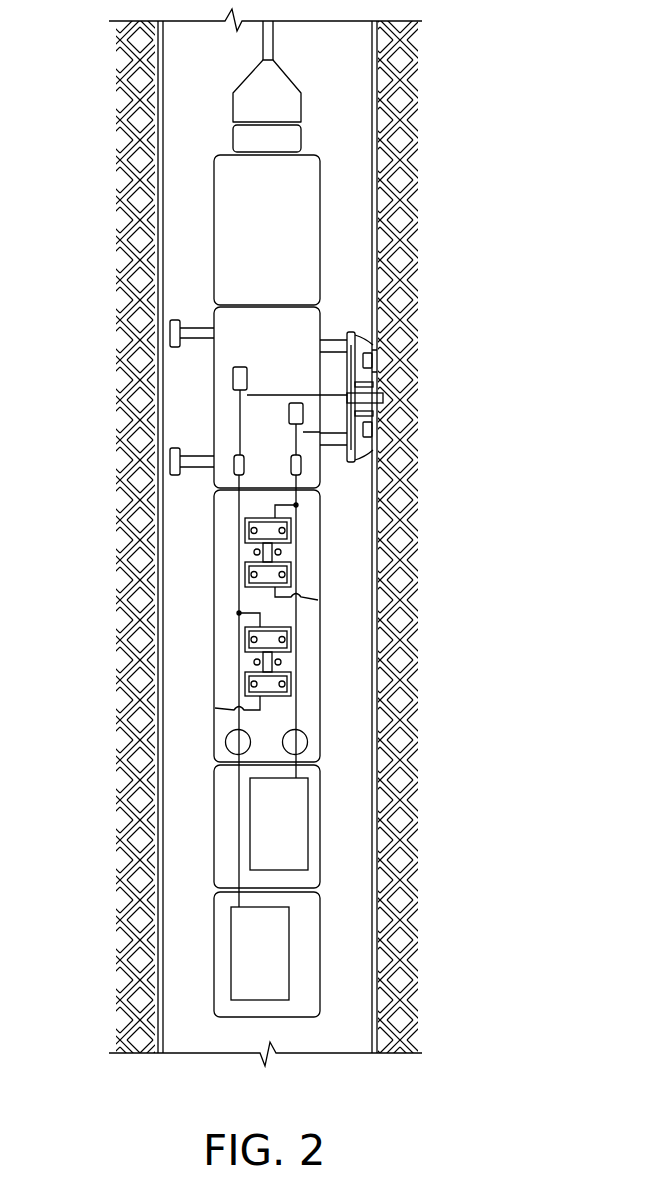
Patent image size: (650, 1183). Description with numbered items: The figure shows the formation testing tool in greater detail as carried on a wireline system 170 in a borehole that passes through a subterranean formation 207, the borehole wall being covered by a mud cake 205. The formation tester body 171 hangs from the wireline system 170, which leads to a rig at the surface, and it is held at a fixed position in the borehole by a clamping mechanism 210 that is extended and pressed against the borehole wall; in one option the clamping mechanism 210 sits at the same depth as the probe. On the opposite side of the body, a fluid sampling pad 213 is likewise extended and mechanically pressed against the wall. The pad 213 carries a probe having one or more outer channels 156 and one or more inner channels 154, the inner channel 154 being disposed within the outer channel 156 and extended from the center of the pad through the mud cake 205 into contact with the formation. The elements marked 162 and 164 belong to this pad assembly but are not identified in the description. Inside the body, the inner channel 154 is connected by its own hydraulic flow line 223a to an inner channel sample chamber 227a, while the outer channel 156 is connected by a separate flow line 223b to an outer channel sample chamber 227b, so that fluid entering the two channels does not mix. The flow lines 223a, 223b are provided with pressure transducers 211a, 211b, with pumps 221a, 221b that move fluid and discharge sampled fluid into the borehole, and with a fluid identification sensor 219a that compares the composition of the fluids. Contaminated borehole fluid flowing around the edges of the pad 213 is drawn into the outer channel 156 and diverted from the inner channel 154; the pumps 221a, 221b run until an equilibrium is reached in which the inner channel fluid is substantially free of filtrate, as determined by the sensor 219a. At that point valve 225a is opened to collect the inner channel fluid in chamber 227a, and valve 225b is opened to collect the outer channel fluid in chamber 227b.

The wireline system 170 is at (275, 47).
The formation tester body 171 is at (320, 219).
The mud cake 205 is at (375, 600).
The subterranean formation 207 is at (390, 634).
The clamping mechanism 210 is at (197, 327).
The fluid sampling pad 213 is at (355, 333).
The seals 162 is at (367, 352).
The outer channel 156 is at (370, 368).
The insulators 164 is at (362, 387).
The inner channel 154 is at (358, 407).
The pressure transducer 211a is at (233, 378).
The pressure transducer 211b is at (289, 416).
The fluid identification sensor 219a is at (234, 470).
The pump 221a is at (291, 676).
The pump 221b is at (291, 566).
The inner channel flow line 223a is at (238, 717).
The outer channel flow line 223b is at (297, 717).
The valve 225a is at (226, 741).
The valve 225b is at (307, 741).
The inner channel sample chamber 227a is at (289, 952).
The outer channel sample chamber 227b is at (308, 825).